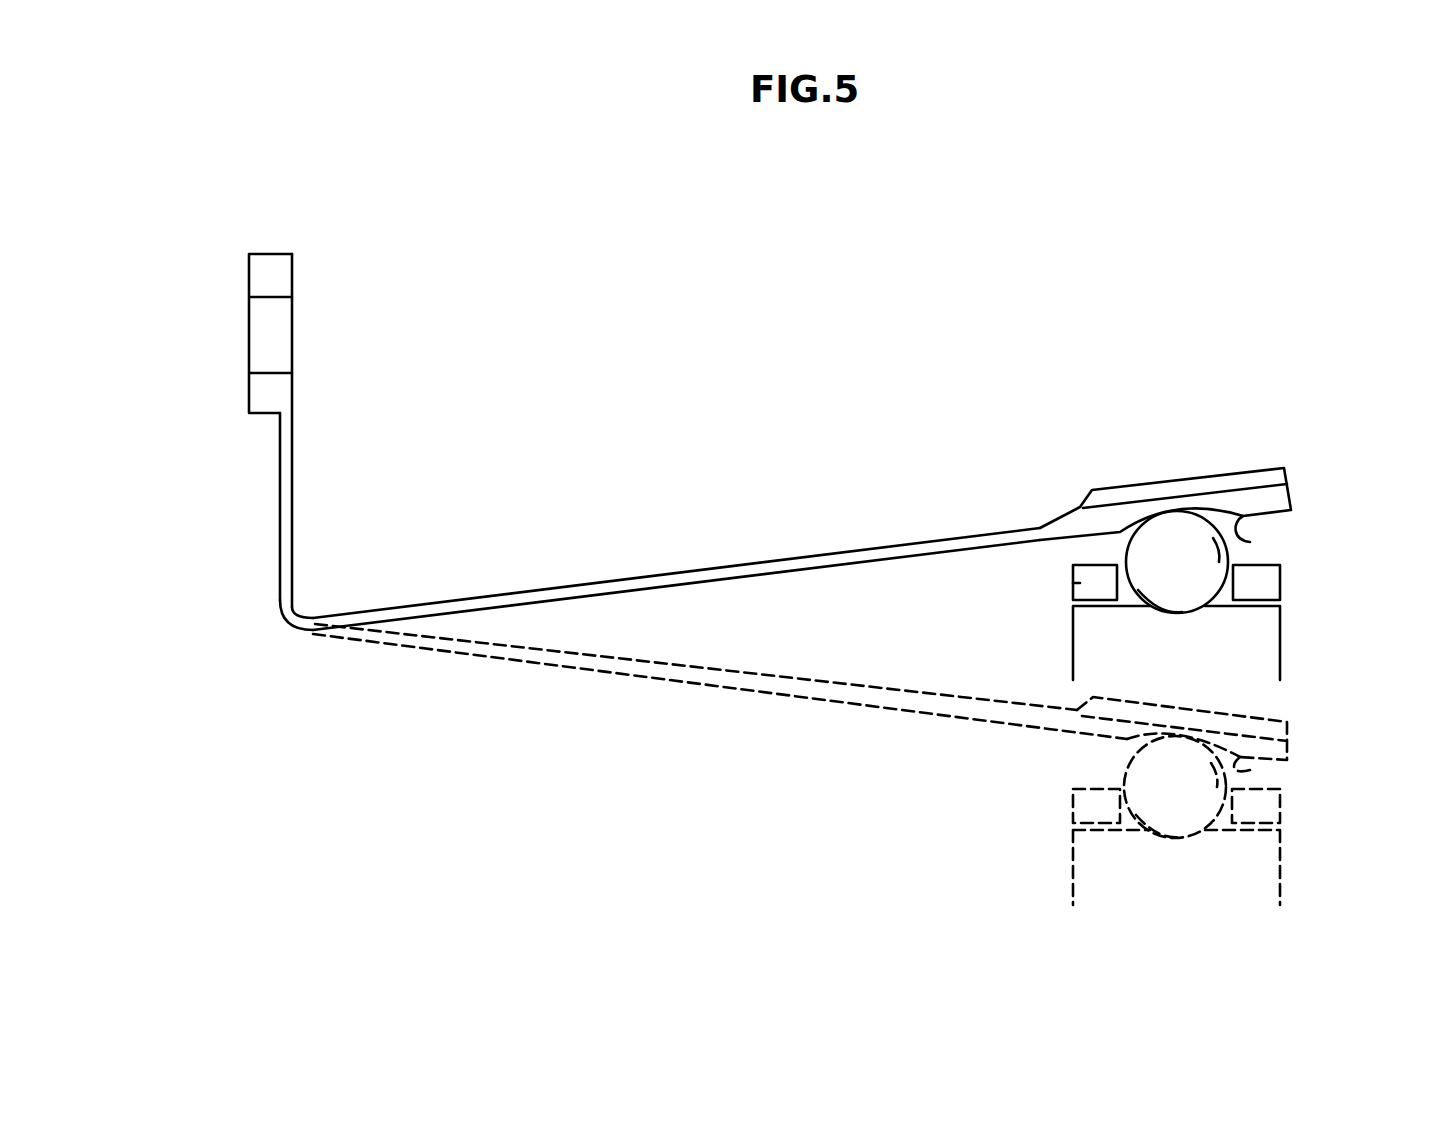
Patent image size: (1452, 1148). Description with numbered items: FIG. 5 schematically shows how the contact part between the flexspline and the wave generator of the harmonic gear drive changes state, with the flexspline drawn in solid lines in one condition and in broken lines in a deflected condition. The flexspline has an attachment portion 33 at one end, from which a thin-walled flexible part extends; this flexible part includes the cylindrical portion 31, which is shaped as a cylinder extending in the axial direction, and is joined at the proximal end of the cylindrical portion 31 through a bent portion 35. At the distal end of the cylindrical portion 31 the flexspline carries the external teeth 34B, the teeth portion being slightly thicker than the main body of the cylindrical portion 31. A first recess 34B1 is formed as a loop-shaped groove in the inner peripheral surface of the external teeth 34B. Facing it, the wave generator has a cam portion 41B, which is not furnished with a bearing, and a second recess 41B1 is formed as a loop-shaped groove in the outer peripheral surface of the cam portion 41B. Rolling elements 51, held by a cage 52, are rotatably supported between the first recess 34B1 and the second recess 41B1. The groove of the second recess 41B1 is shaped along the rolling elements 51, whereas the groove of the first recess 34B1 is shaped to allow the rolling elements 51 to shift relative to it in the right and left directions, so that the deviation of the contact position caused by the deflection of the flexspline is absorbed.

The cylindrical portion 31 is at (632, 578).
The attachment portion 33 is at (265, 275).
The external teeth 34B is at (1252, 476).
The first recess 34B1 is at (1250, 542).
The bent portion 35 is at (287, 617).
The cam portion 41B is at (1257, 630).
The second recess 41B1 is at (1190, 603).
The rolling elements 51 is at (1160, 603).
The cage 52 is at (1083, 585).